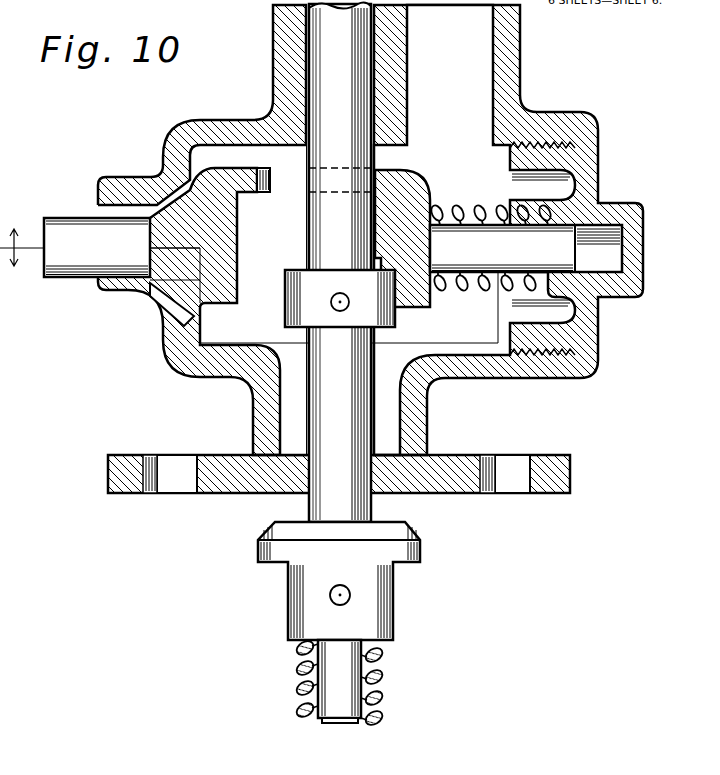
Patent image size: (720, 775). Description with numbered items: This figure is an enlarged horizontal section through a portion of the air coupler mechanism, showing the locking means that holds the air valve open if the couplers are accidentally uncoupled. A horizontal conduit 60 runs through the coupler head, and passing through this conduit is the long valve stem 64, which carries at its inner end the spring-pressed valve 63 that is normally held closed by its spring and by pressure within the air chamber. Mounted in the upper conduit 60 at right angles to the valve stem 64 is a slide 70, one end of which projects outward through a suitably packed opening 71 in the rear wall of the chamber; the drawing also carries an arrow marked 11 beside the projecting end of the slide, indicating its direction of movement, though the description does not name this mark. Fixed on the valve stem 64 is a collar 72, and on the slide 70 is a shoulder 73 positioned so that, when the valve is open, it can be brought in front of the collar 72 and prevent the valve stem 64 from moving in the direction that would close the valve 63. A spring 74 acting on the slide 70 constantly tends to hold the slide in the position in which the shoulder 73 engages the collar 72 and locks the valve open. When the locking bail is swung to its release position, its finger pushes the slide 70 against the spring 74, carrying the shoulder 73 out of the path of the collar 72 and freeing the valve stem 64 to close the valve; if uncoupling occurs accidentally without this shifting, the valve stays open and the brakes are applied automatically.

The horizontal conduit 60 is at (485, 367).
The spring-pressed valve 63 is at (398, 552).
The valve stem 64 is at (357, 363).
The slide 70 is at (75, 258).
The packed opening 71 is at (140, 284).
The collar 72 is at (378, 313).
The shoulder 73 is at (387, 255).
The spring 74 is at (460, 208).
The plunger rod 11 is at (611, 242).